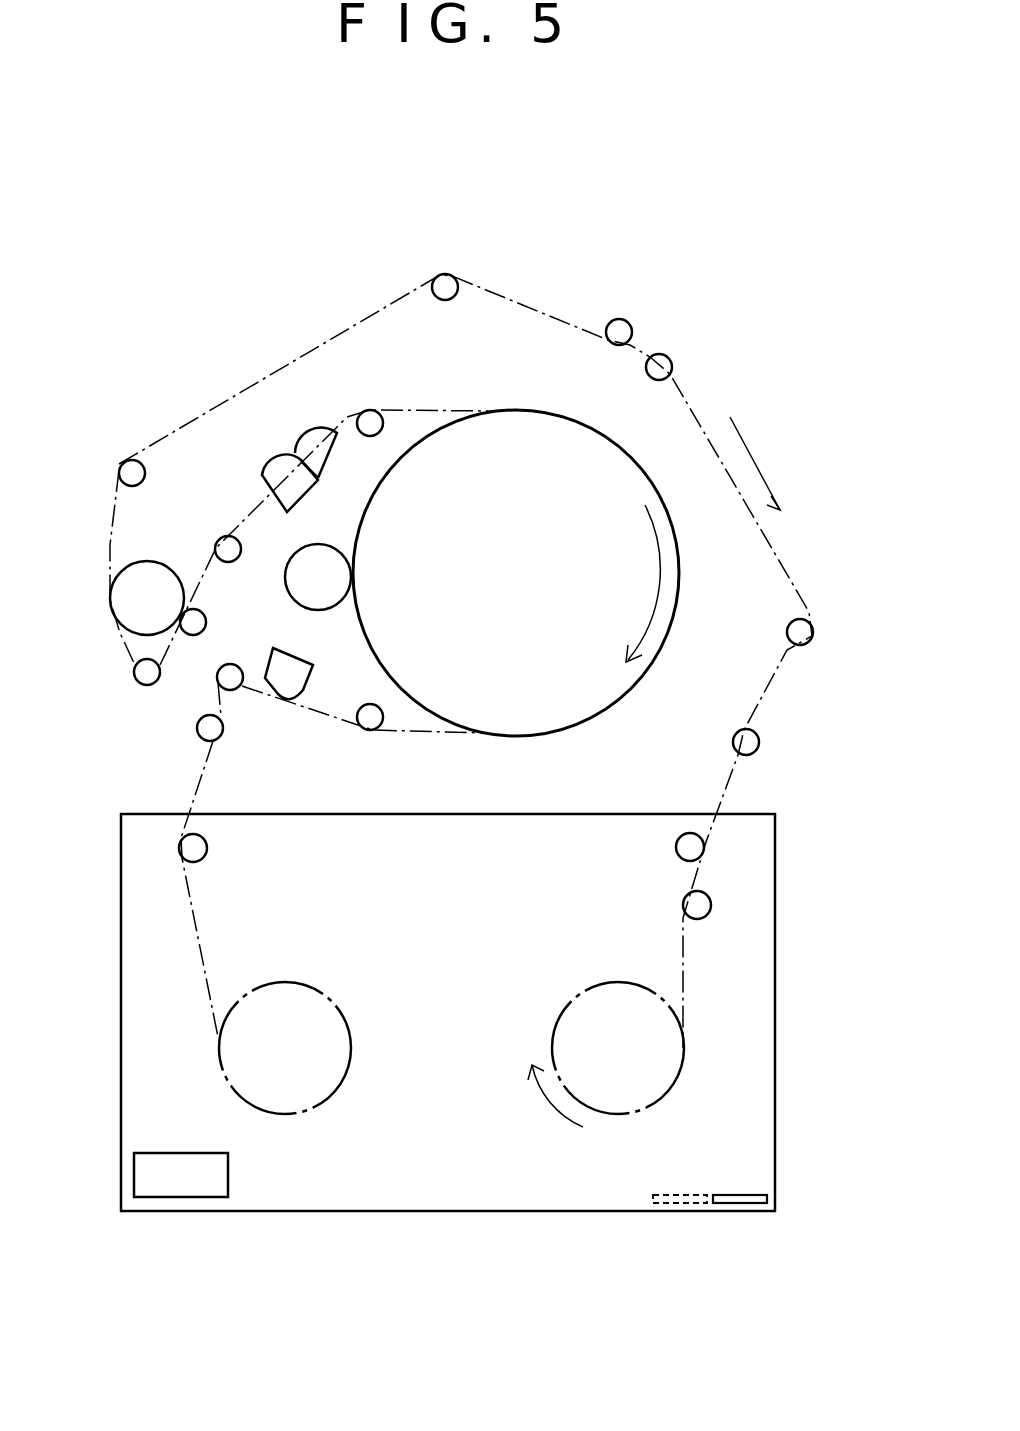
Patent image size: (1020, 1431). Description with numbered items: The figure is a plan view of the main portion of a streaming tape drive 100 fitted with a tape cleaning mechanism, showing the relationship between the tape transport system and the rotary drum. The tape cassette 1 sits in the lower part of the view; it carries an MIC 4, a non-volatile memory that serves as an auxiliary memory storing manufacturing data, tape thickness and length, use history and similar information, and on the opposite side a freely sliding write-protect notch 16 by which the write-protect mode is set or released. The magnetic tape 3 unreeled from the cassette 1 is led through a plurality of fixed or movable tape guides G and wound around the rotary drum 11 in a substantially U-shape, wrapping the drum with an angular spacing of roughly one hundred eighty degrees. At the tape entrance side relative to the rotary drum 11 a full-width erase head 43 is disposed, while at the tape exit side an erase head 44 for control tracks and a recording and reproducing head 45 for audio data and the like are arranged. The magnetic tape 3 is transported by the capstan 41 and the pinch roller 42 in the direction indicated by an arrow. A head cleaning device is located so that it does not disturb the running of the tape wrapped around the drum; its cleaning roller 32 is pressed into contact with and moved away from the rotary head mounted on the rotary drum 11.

The streaming tape drive 100 is at (240, 185).
The magnetic tape 3 is at (785, 556).
The tape guides G is at (445, 276).
The rotary drum 11 is at (630, 695).
The cleaning roller 32 is at (352, 577).
The pinch roller 42 is at (118, 603).
The capstan 41 is at (190, 637).
The recording and reproducing head 45 is at (271, 468).
The erase head 44 is at (308, 434).
The erase head 43 is at (282, 700).
The tape cassette 1 is at (776, 1003).
The MIC 4 is at (175, 1197).
The write-protect notch 16 is at (740, 1203).